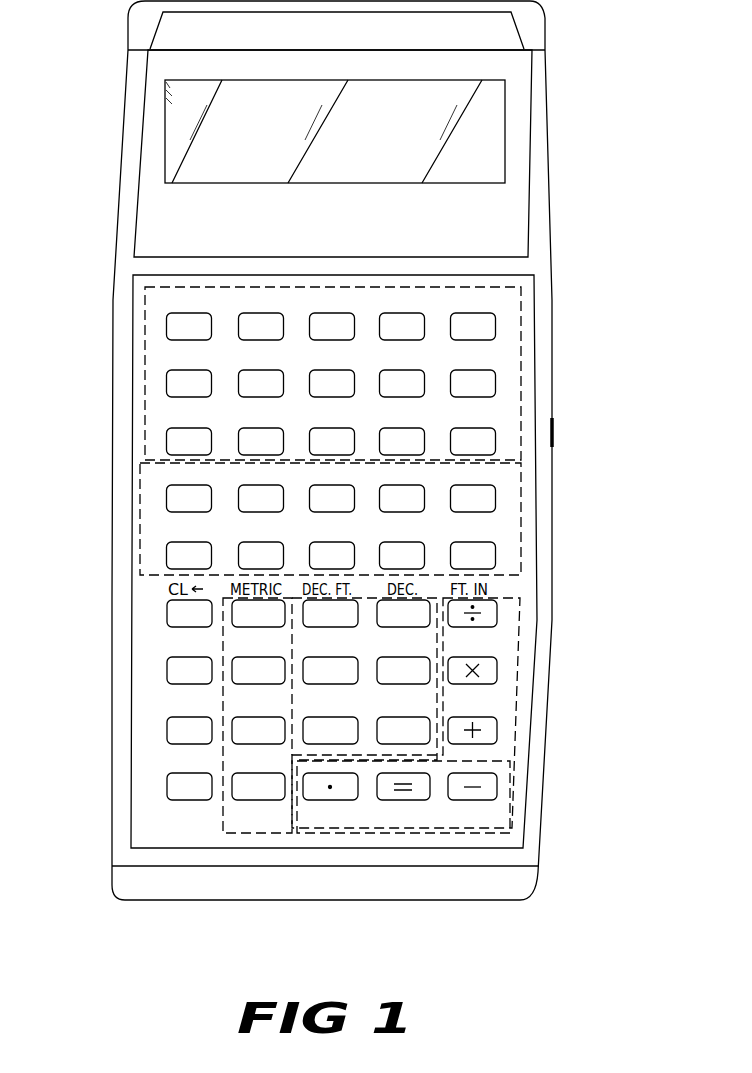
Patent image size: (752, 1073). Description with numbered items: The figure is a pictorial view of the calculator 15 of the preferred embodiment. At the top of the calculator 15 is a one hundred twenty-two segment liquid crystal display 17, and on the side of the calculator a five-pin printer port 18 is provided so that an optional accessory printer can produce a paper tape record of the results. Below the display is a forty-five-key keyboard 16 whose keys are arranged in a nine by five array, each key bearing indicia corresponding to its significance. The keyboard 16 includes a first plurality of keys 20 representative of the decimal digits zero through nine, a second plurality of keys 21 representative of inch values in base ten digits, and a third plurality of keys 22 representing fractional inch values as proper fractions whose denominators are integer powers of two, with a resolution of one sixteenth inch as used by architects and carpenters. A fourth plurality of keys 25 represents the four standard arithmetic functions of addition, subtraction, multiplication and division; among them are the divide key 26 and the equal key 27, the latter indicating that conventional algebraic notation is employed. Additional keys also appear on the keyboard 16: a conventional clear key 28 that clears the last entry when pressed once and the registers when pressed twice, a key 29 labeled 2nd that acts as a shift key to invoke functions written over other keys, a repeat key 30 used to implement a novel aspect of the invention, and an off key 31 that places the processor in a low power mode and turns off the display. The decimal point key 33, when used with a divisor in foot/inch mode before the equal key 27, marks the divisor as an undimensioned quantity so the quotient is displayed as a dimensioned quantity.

The calculator 15 is at (572, 242).
The keyboard 16 is at (142, 383).
The liquid crystal display 17 is at (402, 88).
The printer port 18 is at (553, 428).
The first plurality of keys 20 is at (255, 833).
The second plurality of keys 21 is at (140, 505).
The third plurality of keys 22 is at (143, 327).
The fourth plurality of keys 25 is at (522, 597).
The divide key 26 is at (492, 620).
The equal key 27 is at (420, 792).
The clear key 28 is at (165, 612).
The 2nd key 29 is at (167, 677).
The repeat key 30 is at (167, 737).
The off key 31 is at (165, 795).
The decimal point key 33 is at (347, 792).